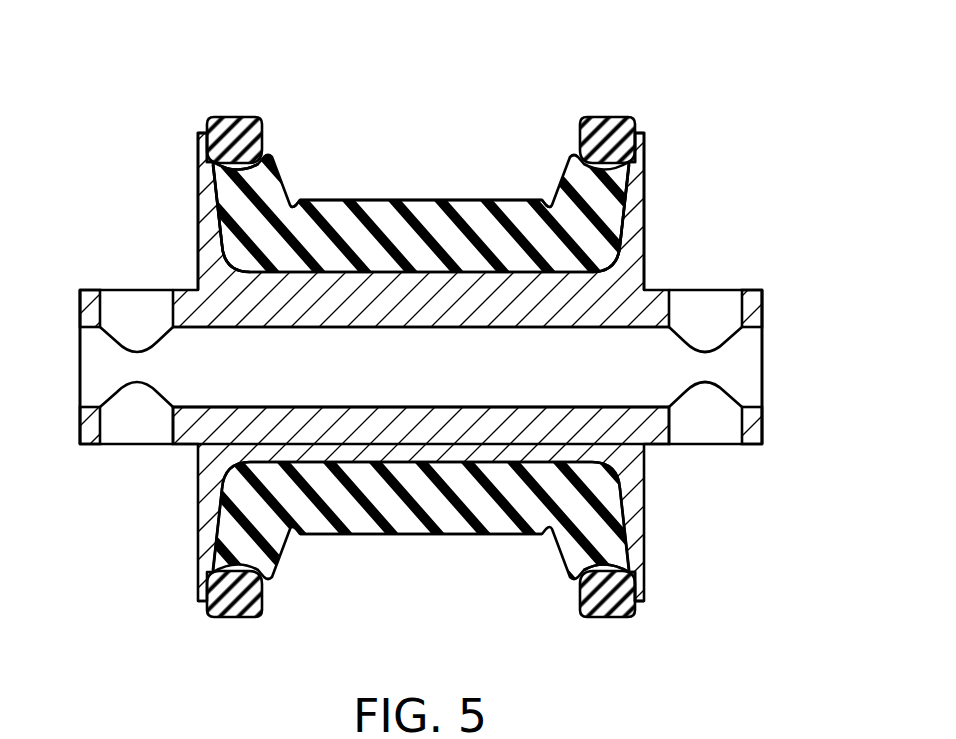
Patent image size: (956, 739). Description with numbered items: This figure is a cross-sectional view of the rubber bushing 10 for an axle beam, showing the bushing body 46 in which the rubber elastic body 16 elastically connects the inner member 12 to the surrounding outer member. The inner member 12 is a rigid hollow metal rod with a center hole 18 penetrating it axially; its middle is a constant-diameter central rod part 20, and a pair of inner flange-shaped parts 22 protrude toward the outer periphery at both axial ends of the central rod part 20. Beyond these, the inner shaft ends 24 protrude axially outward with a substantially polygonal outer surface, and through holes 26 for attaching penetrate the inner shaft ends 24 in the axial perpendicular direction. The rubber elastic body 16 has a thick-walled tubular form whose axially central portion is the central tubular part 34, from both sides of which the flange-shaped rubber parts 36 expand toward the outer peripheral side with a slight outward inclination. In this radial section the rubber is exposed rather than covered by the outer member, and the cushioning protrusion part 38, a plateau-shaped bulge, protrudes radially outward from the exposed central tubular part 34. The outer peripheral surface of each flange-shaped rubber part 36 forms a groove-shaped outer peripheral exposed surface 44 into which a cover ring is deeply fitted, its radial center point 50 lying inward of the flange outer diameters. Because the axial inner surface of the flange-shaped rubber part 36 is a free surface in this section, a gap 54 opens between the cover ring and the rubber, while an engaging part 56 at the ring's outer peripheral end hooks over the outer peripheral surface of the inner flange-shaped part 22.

The rubber bushing 10 is at (664, 70).
The inner member 12 is at (762, 280).
The rubber elastic body 16 is at (216, 523).
The center hole 18 is at (475, 403).
The central rod part 20 is at (343, 440).
The inner flange-shaped part 22 is at (213, 233).
The inner shaft end 24 is at (90, 434).
The through hole 26 is at (103, 306).
The central tubular part 34 is at (448, 233).
The flange-shaped rubber part 36 is at (242, 198).
The cushioning protrusion part 38 is at (472, 202).
The outer peripheral exposed surface 44 is at (590, 160).
The bushing body 46 is at (396, 180).
The center point 50 is at (239, 133).
The gap 54 is at (252, 165).
The engaging part 56 is at (633, 600).